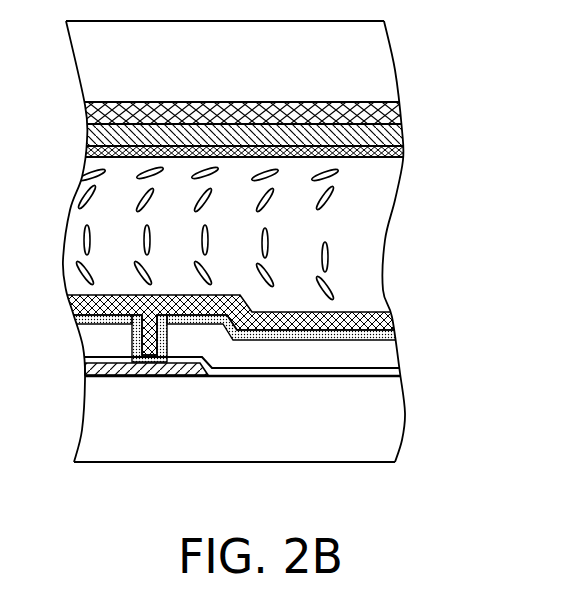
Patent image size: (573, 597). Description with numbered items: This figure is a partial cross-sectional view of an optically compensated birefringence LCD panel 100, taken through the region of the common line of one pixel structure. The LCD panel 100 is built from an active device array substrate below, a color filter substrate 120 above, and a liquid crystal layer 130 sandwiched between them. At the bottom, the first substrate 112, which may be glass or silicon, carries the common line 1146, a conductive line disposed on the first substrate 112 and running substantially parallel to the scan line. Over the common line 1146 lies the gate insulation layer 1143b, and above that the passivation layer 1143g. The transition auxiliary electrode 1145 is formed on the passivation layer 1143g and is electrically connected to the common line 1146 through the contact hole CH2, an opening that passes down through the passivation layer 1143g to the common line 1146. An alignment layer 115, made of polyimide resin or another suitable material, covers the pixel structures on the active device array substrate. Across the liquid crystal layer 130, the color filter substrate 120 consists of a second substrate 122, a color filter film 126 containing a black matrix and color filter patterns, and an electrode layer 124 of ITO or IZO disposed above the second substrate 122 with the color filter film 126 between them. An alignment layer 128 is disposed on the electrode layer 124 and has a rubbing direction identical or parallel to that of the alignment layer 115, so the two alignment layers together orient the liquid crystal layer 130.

The LCD panel 100 is at (483, 505).
The first substrate 112 is at (392, 433).
The alignment layer 115 is at (388, 320).
The color filter substrate 120 is at (305, 123).
The second substrate 122 is at (360, 70).
The electrode layer 124 is at (400, 134).
The color filter film 126 is at (400, 120).
The alignment layer 128 is at (281, 169).
The liquid crystal layer 130 is at (378, 263).
The passivation layer 1143g is at (386, 358).
The gate insulation layer 1143b is at (393, 375).
The transition auxiliary electrode 1145 is at (388, 335).
The common line 1146 is at (87, 367).
The contact hole CH2 is at (142, 312).